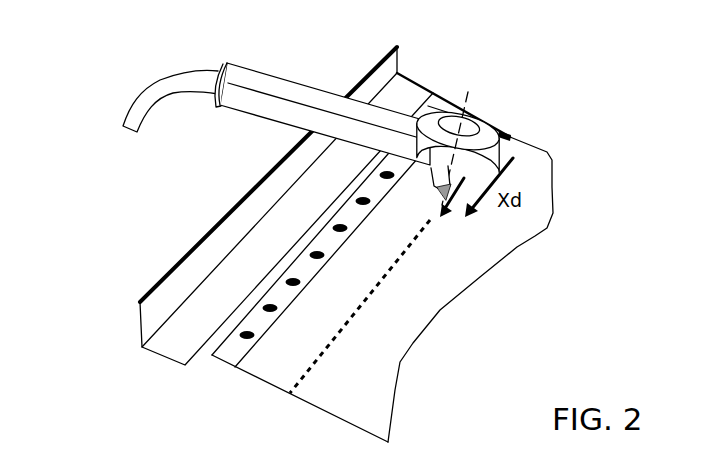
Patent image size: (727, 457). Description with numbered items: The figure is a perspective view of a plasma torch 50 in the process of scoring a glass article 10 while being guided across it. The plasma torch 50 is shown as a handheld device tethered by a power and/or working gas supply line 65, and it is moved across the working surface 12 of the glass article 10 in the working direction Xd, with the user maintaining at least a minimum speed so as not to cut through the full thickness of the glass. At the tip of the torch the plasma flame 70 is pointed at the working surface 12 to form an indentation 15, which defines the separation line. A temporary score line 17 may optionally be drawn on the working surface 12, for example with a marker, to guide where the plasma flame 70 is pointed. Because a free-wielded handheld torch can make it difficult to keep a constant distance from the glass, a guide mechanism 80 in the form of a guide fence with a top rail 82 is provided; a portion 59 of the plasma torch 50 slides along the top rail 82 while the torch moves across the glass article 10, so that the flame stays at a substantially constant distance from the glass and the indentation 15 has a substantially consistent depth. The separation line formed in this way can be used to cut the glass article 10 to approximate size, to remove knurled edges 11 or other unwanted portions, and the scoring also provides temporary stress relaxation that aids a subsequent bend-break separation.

The glass article 10 is at (507, 235).
The knurled edges 11 is at (288, 280).
The working surface 12 is at (302, 334).
The indentation 15 is at (513, 138).
The temporary score line 17 is at (415, 243).
The plasma torch 50 is at (283, 78).
The portion of the plasma torch 59 is at (289, 133).
The power and/or working gas supply line 65 is at (129, 108).
The plasma flame 70 is at (437, 192).
The guide mechanism 80 is at (166, 350).
The top rail 82 is at (168, 276).